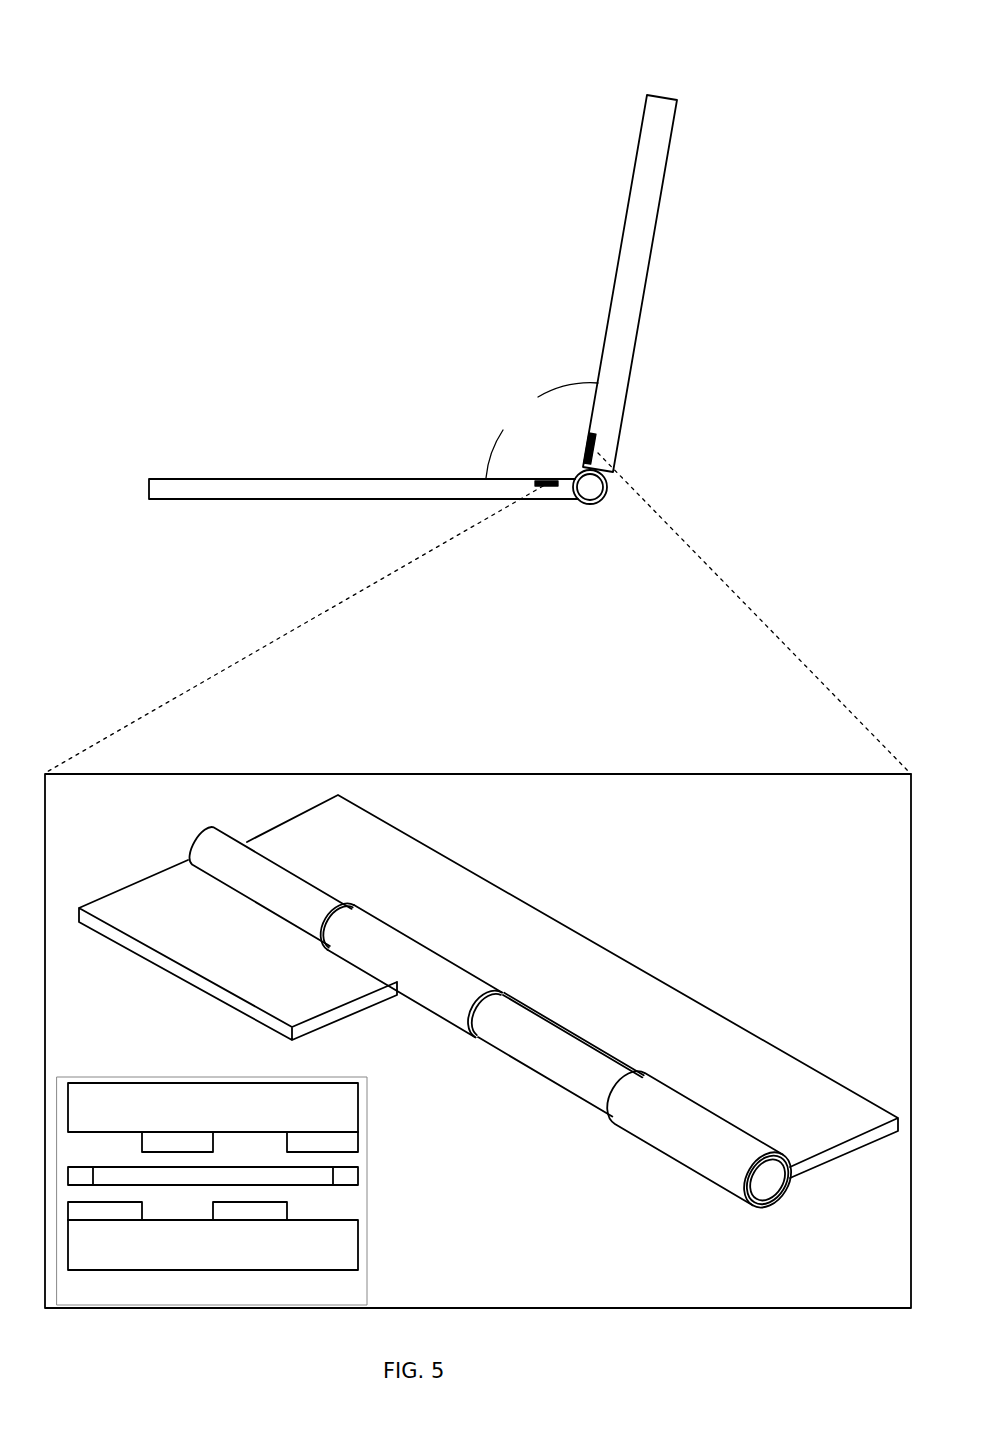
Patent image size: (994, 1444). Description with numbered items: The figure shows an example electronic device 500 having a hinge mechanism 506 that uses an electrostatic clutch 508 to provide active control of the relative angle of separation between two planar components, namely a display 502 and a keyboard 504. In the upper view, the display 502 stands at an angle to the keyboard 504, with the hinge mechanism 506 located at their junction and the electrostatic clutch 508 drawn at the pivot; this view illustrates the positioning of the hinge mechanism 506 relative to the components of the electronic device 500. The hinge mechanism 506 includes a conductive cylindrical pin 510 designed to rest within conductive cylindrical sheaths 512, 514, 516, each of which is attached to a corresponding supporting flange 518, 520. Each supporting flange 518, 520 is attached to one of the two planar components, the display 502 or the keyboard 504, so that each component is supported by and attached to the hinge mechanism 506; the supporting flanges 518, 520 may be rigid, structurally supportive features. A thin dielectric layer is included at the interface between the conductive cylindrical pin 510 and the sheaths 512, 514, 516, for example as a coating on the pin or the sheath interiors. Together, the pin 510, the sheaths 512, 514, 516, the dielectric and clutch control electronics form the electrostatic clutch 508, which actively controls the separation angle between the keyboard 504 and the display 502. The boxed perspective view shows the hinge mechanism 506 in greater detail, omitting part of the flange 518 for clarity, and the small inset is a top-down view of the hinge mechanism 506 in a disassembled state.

The electronic device 500 is at (140, 54).
The display 502 is at (630, 253).
The keyboard 504 is at (302, 490).
The hinge mechanism 506 is at (536, 454).
The electrostatic clutch 508 is at (589, 488).
The conductive cylindrical pin 510 is at (535, 1048).
The conductive cylindrical sheath 512 is at (252, 867).
The conductive cylindrical sheath 514 is at (382, 952).
The conductive cylindrical sheath 516 is at (690, 1128).
The supporting flange 518 is at (552, 483).
The supporting flange 520 is at (592, 447).